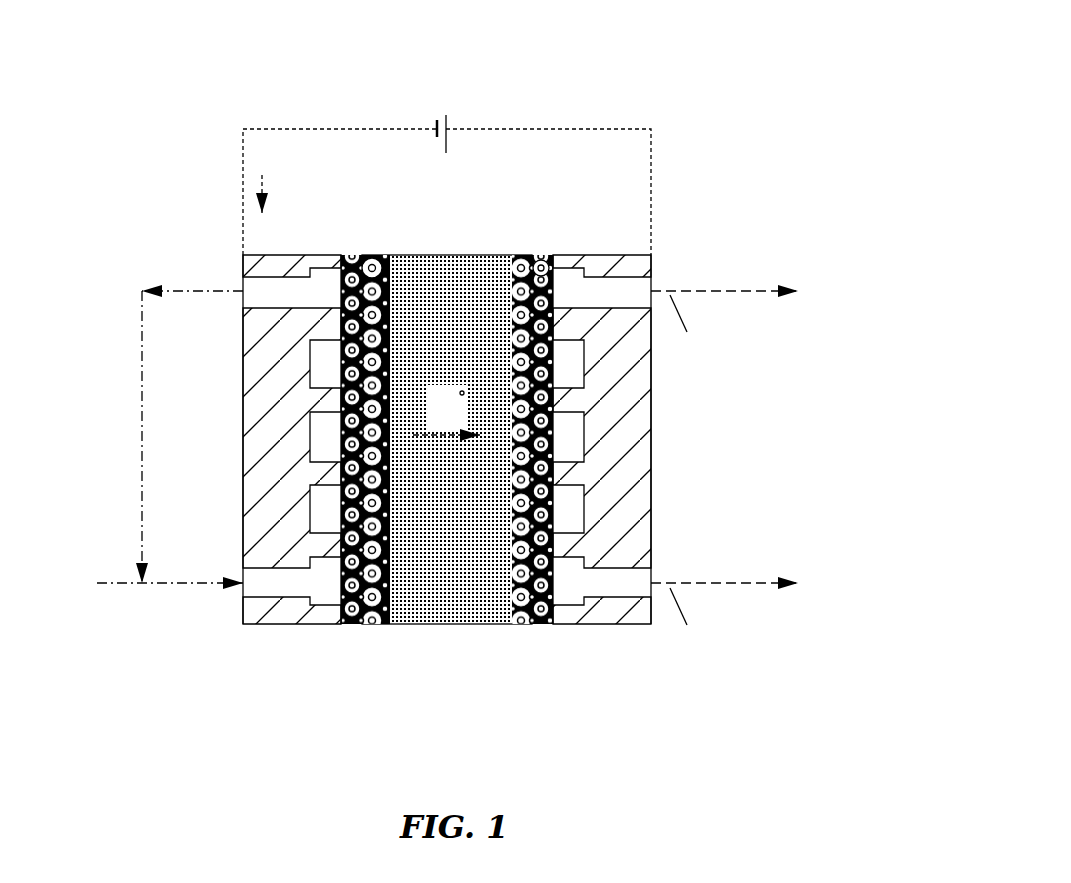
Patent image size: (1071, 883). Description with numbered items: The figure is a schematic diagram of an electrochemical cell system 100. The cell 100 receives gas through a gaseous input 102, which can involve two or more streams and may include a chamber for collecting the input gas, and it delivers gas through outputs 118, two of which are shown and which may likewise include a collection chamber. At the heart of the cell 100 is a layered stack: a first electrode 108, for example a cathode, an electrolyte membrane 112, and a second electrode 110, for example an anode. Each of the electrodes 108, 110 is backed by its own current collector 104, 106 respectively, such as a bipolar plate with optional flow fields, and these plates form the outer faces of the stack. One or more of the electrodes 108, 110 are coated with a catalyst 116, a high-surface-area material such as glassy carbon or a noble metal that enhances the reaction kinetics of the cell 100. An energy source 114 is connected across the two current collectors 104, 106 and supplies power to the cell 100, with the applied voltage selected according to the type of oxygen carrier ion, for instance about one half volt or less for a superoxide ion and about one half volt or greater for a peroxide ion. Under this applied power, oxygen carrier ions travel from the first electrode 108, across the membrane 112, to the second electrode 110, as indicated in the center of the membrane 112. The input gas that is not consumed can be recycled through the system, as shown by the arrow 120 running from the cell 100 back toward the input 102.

The electrochemical cell system 100 is at (690, 93).
The gaseous input 102 is at (193, 583).
The current collector 104 is at (255, 437).
The current collector 106 is at (643, 438).
The first electrode 108 is at (365, 620).
The second electrode 110 is at (538, 608).
The electrolyte membrane 112 is at (452, 258).
The energy source 114 is at (418, 128).
The catalyst 116 is at (348, 258).
The output 118 is at (727, 290).
The arrow 120 is at (192, 283).